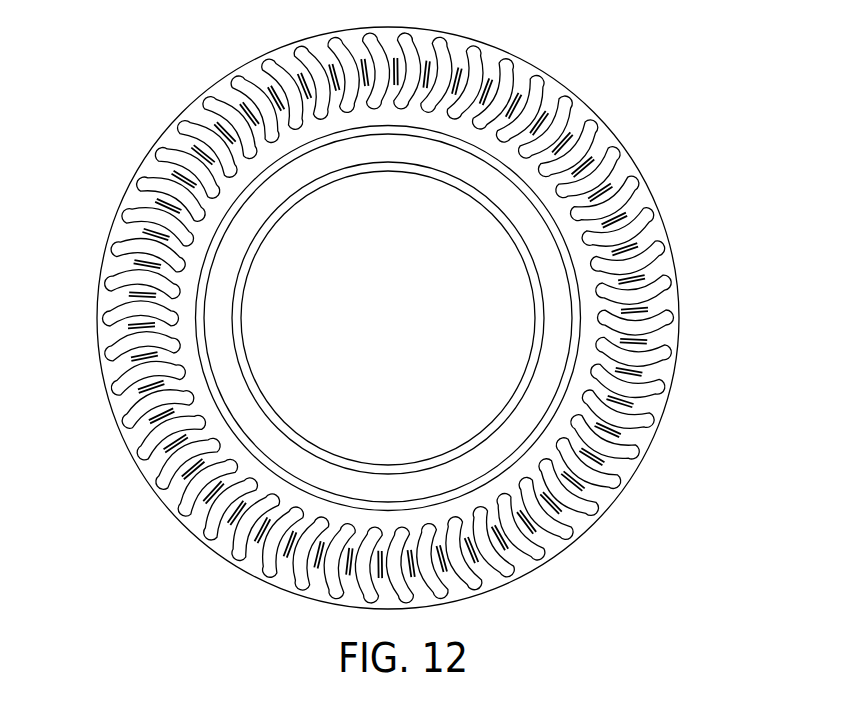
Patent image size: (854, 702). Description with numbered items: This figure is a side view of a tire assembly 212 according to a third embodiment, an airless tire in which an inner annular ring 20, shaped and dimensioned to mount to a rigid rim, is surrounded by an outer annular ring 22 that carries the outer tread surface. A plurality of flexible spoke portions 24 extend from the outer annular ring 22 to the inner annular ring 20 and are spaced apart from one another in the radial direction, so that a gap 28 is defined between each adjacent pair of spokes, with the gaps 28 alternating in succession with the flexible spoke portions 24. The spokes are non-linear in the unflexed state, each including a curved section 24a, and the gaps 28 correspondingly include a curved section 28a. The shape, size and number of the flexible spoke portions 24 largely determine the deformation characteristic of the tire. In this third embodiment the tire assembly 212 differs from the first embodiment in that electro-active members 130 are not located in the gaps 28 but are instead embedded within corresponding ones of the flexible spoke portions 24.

The inner annular ring 20 is at (543, 254).
The outer annular ring 22 is at (653, 192).
The flexible spoke portions 24 is at (438, 31).
The curved section 24a is at (556, 82).
The gap 28 is at (655, 246).
The curved section 28a is at (640, 328).
The electro-active members 130 is at (163, 207).
The tire assembly 212 is at (401, 318).